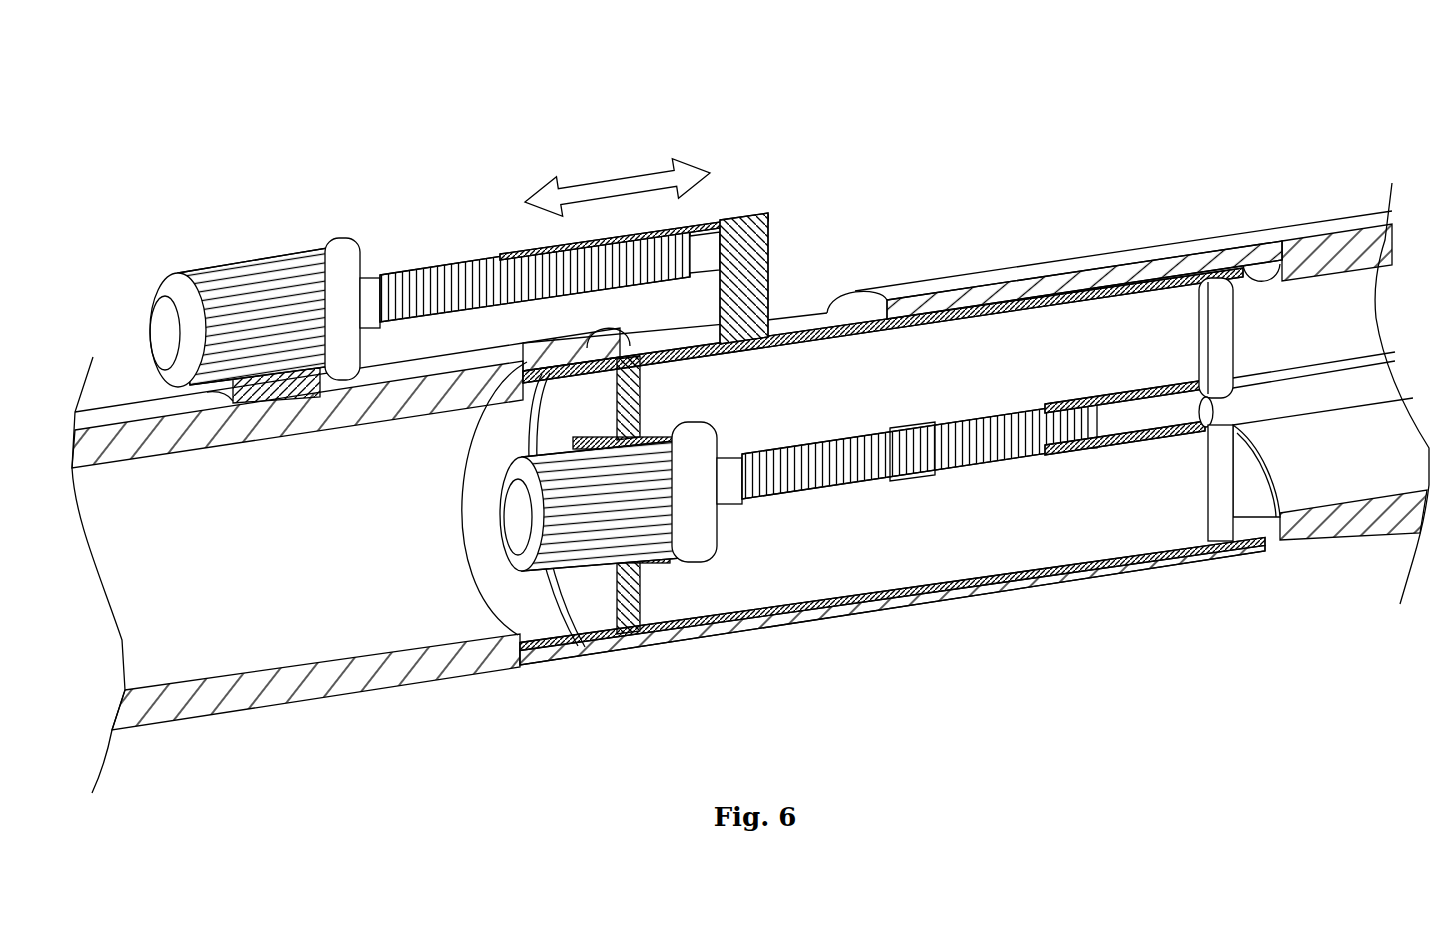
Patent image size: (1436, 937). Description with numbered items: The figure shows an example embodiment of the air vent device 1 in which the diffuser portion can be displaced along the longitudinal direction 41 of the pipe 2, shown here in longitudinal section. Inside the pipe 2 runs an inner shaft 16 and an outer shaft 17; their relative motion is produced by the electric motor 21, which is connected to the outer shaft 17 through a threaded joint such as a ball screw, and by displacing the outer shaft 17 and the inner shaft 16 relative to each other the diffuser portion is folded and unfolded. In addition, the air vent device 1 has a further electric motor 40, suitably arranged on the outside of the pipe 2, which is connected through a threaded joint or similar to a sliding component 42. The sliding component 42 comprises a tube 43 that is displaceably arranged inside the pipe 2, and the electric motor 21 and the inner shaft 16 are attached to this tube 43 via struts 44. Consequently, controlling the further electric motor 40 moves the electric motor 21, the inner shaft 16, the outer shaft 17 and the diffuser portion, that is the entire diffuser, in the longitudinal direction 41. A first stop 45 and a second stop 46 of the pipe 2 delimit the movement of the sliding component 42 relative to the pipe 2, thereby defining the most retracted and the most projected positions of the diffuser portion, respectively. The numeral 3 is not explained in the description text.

The air vent device 1 is at (769, 92).
The pipe 2 is at (347, 670).
The outer tube interior 3 is at (235, 550).
The inner shaft 16 is at (1336, 392).
The outer shaft 17 is at (1100, 457).
The electric motor 21 is at (560, 622).
The further electric motor 40 is at (232, 318).
The longitudinal direction 41 is at (620, 180).
The sliding component 42 is at (815, 272).
The tube 43 is at (1082, 290).
The struts 44 is at (1207, 487).
The first stop 45 is at (600, 522).
The second stop 46 is at (1268, 537).